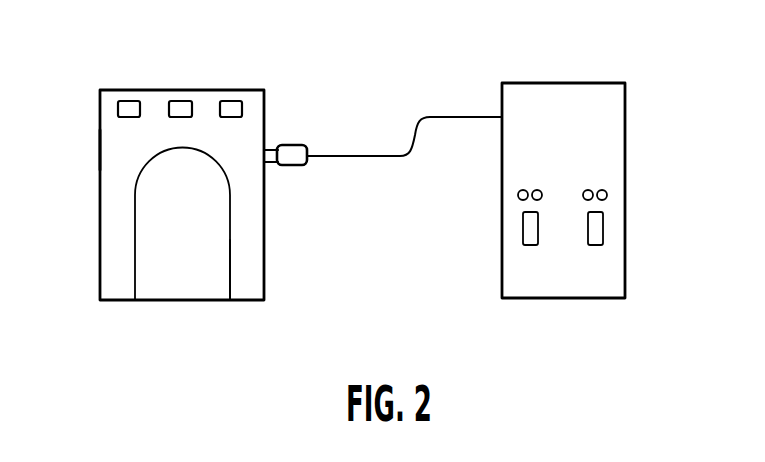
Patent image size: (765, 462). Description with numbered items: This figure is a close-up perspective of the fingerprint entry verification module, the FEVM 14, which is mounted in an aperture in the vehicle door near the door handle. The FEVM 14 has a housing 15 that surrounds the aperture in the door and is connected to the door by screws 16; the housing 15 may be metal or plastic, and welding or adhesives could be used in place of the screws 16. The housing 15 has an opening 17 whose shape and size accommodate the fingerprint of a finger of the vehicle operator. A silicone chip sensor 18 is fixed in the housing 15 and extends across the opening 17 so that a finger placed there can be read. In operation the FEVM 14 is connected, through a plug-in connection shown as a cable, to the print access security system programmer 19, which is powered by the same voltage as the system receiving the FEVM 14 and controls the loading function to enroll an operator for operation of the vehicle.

The FEVM 14 is at (100, 237).
The housing 15 is at (108, 150).
The screws 16 is at (228, 101).
The opening 17 is at (158, 273).
The silicone chip sensor 18 is at (212, 287).
The print access security system programmer 19 is at (630, 130).